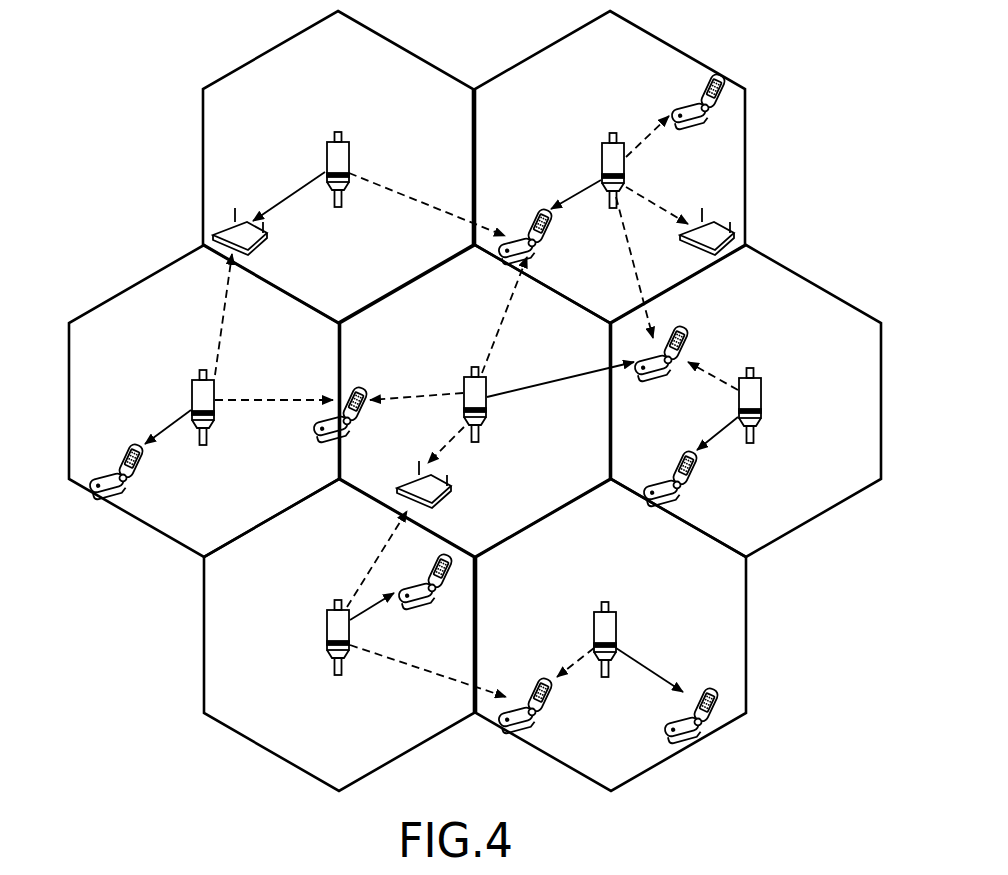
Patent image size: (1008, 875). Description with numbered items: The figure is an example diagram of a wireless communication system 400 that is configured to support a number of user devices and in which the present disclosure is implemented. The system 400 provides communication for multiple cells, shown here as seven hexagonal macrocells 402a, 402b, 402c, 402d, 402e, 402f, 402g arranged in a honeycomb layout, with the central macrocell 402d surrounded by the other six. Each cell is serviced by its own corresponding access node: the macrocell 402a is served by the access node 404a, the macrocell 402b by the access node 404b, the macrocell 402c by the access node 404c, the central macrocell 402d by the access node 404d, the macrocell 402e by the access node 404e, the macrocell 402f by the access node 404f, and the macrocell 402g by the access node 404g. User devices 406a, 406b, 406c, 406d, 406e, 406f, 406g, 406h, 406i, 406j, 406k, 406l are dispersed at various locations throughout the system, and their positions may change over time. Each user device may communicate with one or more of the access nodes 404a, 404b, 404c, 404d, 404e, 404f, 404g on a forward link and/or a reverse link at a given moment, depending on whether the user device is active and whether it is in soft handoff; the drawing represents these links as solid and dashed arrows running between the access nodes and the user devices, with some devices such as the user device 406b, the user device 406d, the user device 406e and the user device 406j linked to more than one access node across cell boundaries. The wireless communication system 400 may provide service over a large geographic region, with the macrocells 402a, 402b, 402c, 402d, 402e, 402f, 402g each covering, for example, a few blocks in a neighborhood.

The wireless communication system 400 is at (122, 65).
The macrocell 402a is at (258, 58).
The macrocell 402b is at (695, 60).
The macrocell 402c is at (138, 283).
The macrocell 402d is at (495, 292).
The macrocell 402e is at (789, 270).
The macrocell 402f is at (203, 623).
The macrocell 402g is at (746, 629).
The access node 404a is at (327, 157).
The access node 404b is at (601, 153).
The access node 404c is at (192, 395).
The access node 404d is at (465, 378).
The access node 404e is at (762, 392).
The access node 404f is at (327, 630).
The access node 404g is at (617, 628).
The user device 406a is at (216, 235).
The user device 406b is at (544, 232).
The user device 406c is at (141, 455).
The user device 406d is at (342, 395).
The user device 406e is at (684, 330).
The user device 406f is at (440, 577).
The user device 406g is at (540, 704).
The user device 406h is at (718, 230).
The user device 406i is at (690, 124).
The user device 406j is at (450, 495).
The user device 406k is at (689, 470).
The user device 406l is at (712, 720).